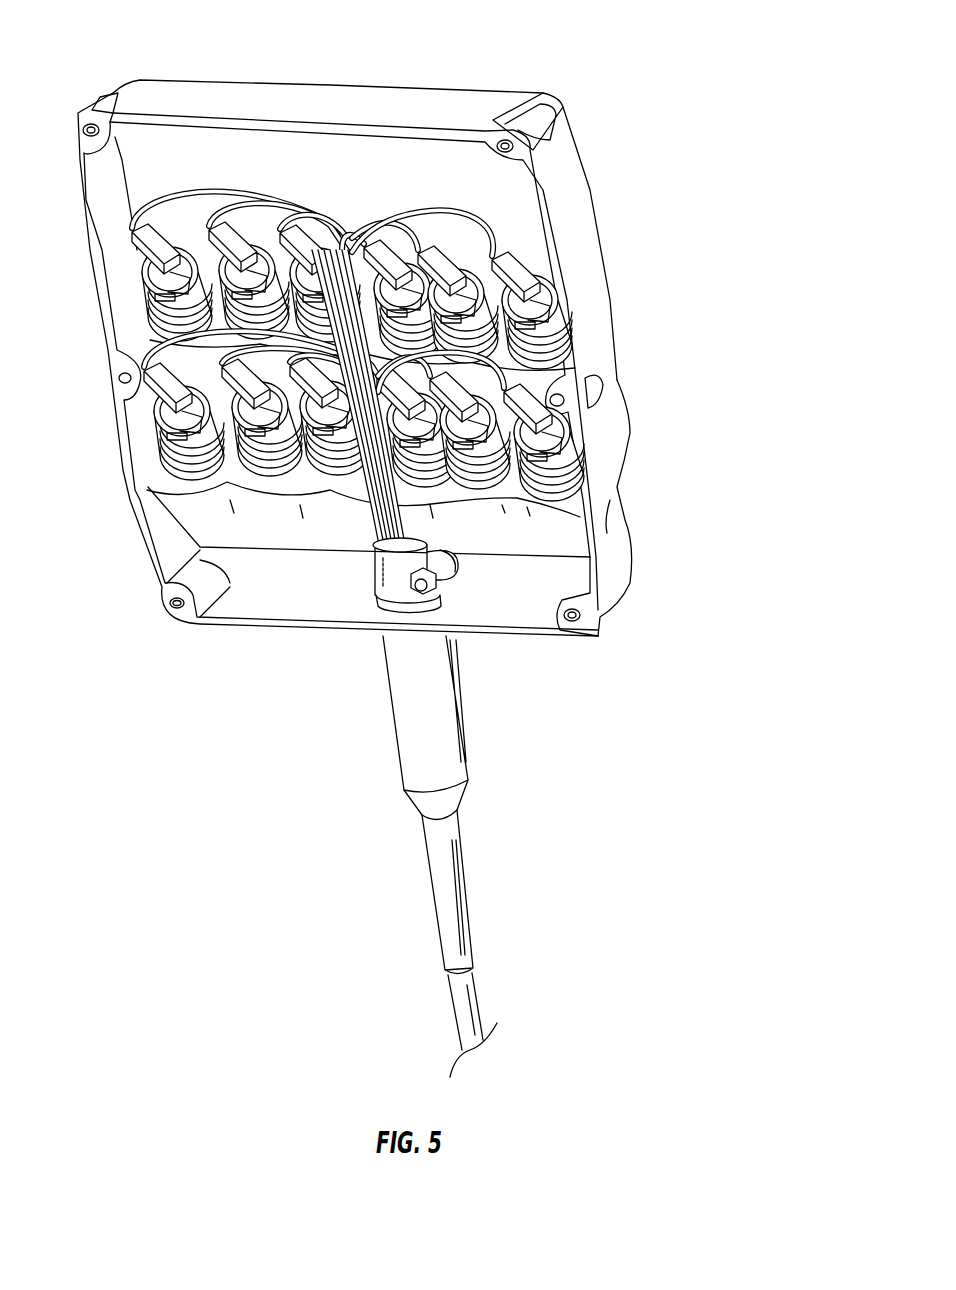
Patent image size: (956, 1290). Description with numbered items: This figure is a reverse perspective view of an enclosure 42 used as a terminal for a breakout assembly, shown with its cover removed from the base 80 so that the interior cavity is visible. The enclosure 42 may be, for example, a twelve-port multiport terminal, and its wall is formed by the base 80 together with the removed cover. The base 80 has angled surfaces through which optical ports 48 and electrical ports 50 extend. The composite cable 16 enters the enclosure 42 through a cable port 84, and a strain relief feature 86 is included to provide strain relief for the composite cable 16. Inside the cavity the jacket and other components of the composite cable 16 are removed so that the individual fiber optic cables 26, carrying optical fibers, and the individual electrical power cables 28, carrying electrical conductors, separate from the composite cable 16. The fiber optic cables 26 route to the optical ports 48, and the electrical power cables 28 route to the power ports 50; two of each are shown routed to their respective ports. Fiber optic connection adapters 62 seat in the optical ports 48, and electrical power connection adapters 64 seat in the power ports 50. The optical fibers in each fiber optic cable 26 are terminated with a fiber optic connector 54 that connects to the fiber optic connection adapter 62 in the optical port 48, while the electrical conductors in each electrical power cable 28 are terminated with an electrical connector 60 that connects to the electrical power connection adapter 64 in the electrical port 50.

The enclosure 42 is at (232, 80).
The base 80 is at (578, 140).
The fiber optic cable 26 is at (490, 233).
The fiber optic connector 54 is at (533, 282).
The fiber optic connection adapter 62 is at (548, 300).
The optical port 48 is at (560, 325).
The electrical power cable 28 is at (158, 352).
The electrical connector 60 is at (157, 383).
The electrical power connection adapter 64 is at (170, 427).
The electrical port 50 is at (170, 447).
The cable port 84 is at (437, 598).
The strain relief feature 86 is at (457, 777).
The composite cable 16 is at (480, 993).